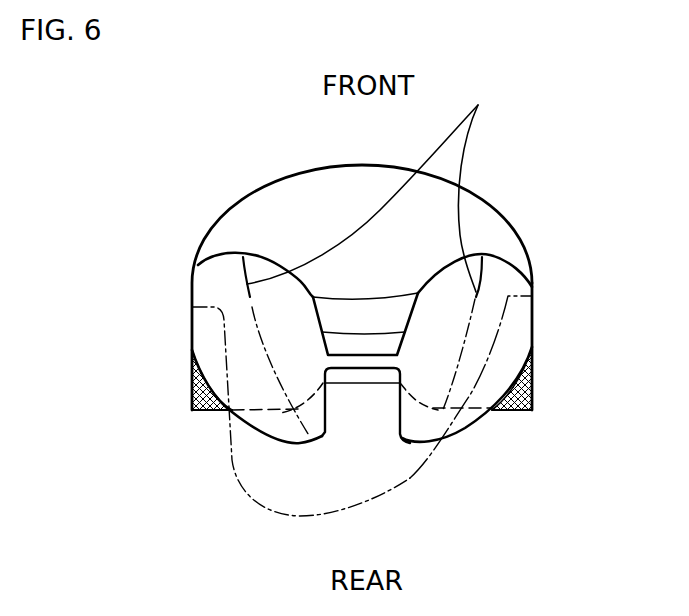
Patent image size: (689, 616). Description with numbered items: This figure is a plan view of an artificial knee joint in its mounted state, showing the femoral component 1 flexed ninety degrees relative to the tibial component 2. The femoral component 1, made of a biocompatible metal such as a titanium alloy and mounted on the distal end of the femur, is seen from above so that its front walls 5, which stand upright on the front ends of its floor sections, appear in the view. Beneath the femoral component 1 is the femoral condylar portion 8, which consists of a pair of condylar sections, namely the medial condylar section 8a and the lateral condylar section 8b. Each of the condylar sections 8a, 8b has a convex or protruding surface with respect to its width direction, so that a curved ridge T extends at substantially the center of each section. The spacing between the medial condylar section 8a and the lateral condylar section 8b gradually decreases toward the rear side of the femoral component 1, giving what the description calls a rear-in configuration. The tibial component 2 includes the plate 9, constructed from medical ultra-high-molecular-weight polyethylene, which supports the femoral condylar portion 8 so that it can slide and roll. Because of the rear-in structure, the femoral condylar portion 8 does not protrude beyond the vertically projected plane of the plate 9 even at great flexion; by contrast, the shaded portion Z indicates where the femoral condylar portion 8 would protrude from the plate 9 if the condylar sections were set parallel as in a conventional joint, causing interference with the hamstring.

The femoral component 1 is at (538, 311).
The tibial component 2 is at (527, 225).
The front walls 5 is at (413, 478).
The femoral condylar portion 8 is at (541, 269).
The medial condylar section 8a is at (507, 360).
The lateral condylar section 8b is at (192, 330).
The plate 9 is at (480, 213).
The curved ridge T is at (375, 190).
The shaded portion Z is at (532, 390).